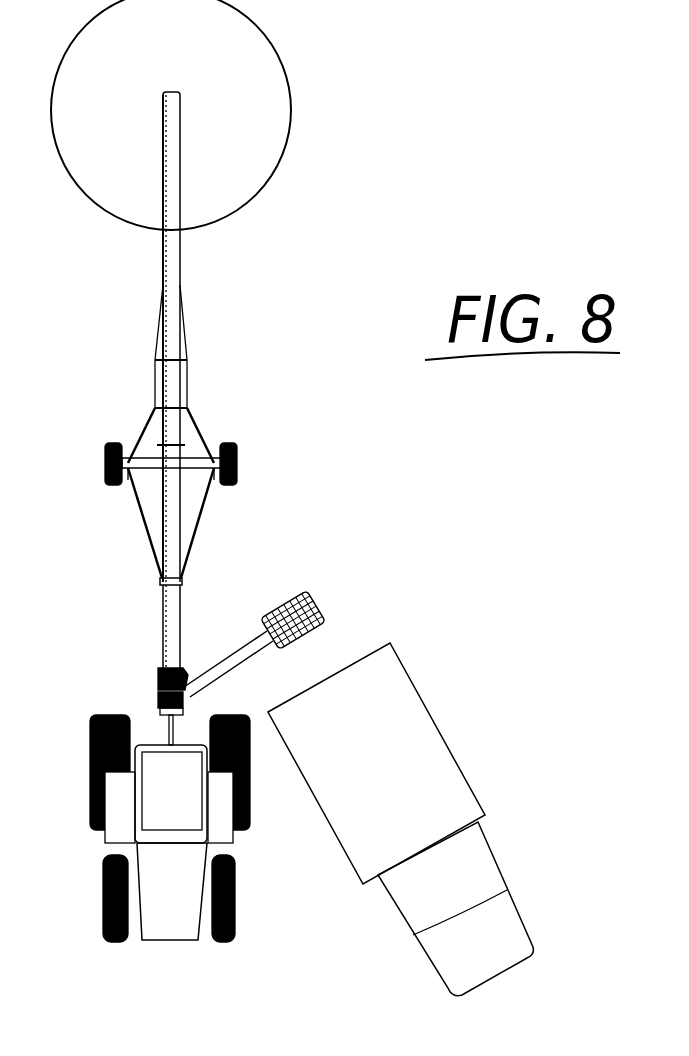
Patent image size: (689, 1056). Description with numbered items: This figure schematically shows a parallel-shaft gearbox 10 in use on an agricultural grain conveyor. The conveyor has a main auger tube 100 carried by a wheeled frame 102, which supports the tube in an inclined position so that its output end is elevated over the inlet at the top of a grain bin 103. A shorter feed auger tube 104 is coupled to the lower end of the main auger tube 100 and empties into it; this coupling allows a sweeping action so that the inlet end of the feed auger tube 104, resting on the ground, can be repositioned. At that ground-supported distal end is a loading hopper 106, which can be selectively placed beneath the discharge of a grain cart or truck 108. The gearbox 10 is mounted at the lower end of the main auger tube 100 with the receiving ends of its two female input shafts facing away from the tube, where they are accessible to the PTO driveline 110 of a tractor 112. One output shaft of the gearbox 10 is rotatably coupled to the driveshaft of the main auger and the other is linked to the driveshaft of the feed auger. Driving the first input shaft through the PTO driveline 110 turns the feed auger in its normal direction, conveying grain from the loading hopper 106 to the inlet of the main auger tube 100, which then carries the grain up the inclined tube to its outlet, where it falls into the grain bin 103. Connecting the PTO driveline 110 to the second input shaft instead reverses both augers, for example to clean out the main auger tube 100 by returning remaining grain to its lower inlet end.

The gearbox 10 is at (158, 710).
The main auger tube 100 is at (176, 596).
The wheeled frame 102 is at (247, 465).
The grain bin 103 is at (247, 172).
The feed auger tube 104 is at (243, 656).
The loading hopper 106 is at (312, 592).
The grain cart or truck 108 is at (402, 735).
The PTO driveline 110 is at (168, 738).
The tractor 112 is at (167, 928).